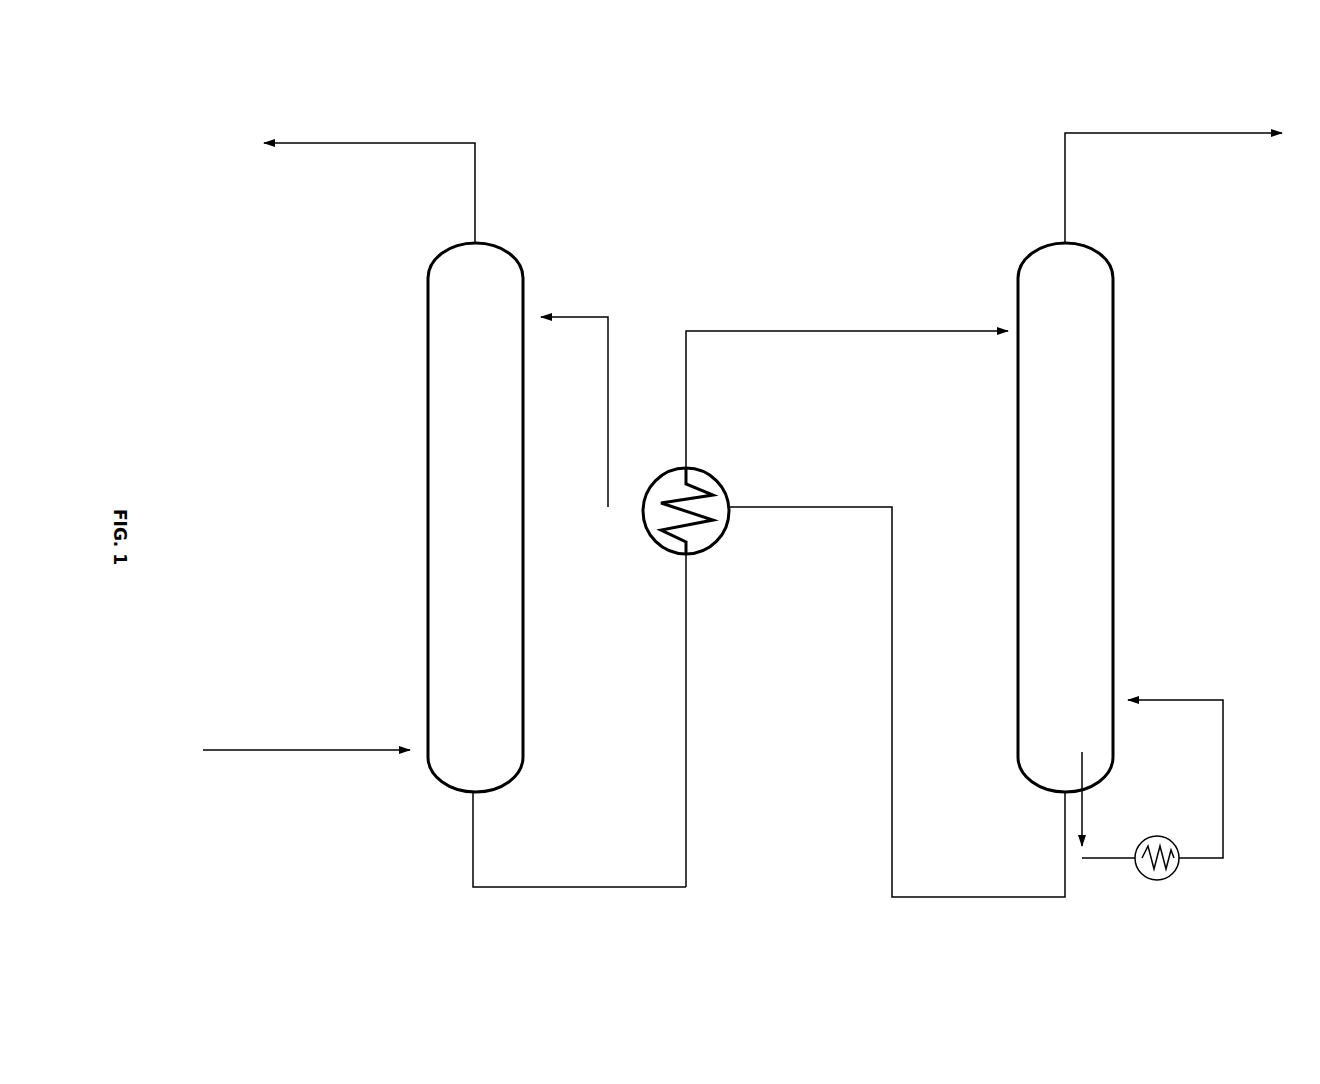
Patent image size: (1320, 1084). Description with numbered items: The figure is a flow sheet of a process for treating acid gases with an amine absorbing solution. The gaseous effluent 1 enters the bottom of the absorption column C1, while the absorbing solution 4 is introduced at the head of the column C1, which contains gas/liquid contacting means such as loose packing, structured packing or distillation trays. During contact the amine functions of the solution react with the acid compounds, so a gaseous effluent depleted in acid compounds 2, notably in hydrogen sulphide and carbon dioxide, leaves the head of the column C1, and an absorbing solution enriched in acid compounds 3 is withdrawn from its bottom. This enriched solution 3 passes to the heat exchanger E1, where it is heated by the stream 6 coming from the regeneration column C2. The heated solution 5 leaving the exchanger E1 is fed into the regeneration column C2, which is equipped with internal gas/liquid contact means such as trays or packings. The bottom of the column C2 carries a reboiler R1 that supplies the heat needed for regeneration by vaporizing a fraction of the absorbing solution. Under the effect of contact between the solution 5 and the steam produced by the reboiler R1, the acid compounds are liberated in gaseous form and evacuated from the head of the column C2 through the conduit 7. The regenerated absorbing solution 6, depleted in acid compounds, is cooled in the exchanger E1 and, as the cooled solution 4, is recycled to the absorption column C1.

The gaseous effluent 1 is at (296, 750).
The gaseous effluent depleted in acid compounds 2 is at (330, 143).
The absorbing solution enriched in acid compounds 3 is at (583, 888).
The absorbing solution 4 is at (573, 317).
The heated solution 5 is at (924, 331).
The regenerated absorbing solution 6 is at (945, 897).
The conduit 7 is at (1163, 133).
The absorption column C1 is at (524, 597).
The regeneration column C2 is at (1114, 523).
The heat exchanger E1 is at (700, 473).
The reboiler R1 is at (1152, 808).